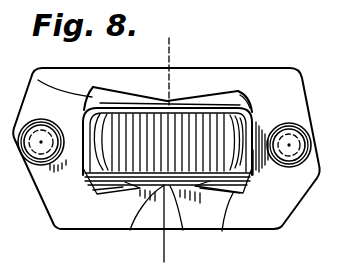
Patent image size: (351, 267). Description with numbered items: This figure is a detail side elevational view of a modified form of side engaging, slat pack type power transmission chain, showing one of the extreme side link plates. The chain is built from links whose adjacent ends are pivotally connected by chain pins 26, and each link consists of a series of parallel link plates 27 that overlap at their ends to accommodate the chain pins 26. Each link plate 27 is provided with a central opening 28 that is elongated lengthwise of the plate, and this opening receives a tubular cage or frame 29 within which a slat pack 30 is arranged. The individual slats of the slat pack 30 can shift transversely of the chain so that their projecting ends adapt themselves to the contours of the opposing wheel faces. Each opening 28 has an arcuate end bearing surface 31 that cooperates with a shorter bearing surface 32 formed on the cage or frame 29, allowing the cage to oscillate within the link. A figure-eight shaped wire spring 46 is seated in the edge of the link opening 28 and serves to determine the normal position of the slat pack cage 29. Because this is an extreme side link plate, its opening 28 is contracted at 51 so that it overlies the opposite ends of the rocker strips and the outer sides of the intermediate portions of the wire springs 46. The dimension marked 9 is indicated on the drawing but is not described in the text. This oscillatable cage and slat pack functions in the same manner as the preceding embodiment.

The dimension gap 9 is at (163, 48).
The chain pin 26 is at (36, 145).
The link plate 27 is at (292, 207).
The central opening 28 is at (207, 93).
The cage or frame 29 is at (114, 98).
The slat pack 30 is at (130, 231).
The arcuate end bearing surface 31 is at (38, 81).
The bearing surface 32 is at (82, 170).
The spring 46 is at (223, 231).
The contracted portion of opening 51 is at (177, 99).